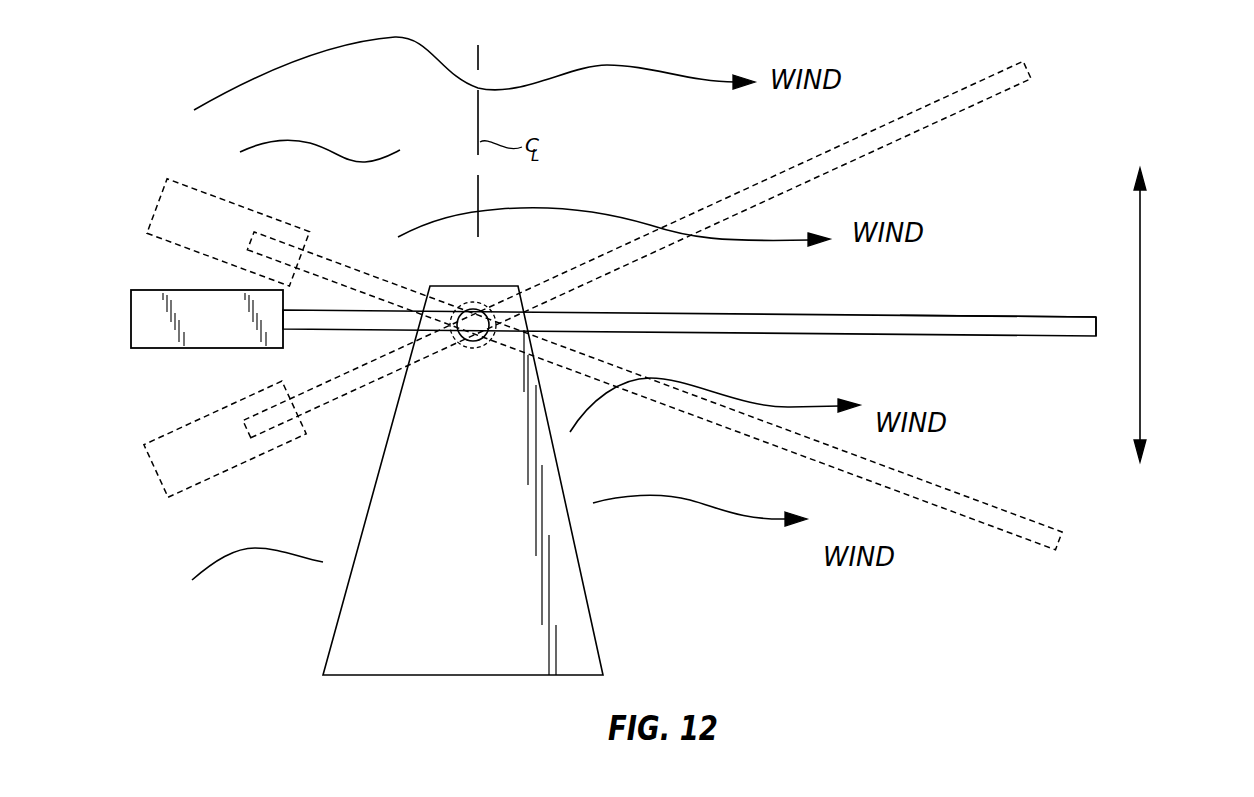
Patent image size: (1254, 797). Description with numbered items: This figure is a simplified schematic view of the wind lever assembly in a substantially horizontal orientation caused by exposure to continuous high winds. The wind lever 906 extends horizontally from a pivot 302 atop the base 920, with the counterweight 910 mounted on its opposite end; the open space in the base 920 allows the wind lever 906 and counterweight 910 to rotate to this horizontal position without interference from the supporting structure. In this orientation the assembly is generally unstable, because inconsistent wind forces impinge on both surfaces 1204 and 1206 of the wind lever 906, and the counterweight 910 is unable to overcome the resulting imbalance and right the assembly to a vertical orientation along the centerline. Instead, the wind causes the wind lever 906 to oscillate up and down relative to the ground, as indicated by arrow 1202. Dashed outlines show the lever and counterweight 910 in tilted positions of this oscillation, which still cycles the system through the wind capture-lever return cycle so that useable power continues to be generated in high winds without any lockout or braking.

The pivot hub 302 is at (474, 322).
The wind lever 906 is at (905, 324).
The counterweight 910 is at (153, 330).
The base 920 is at (545, 543).
The arrow 1202 is at (1141, 400).
The surface of the wind lever 1204 is at (934, 316).
The surface of the wind lever 1206 is at (1040, 337).